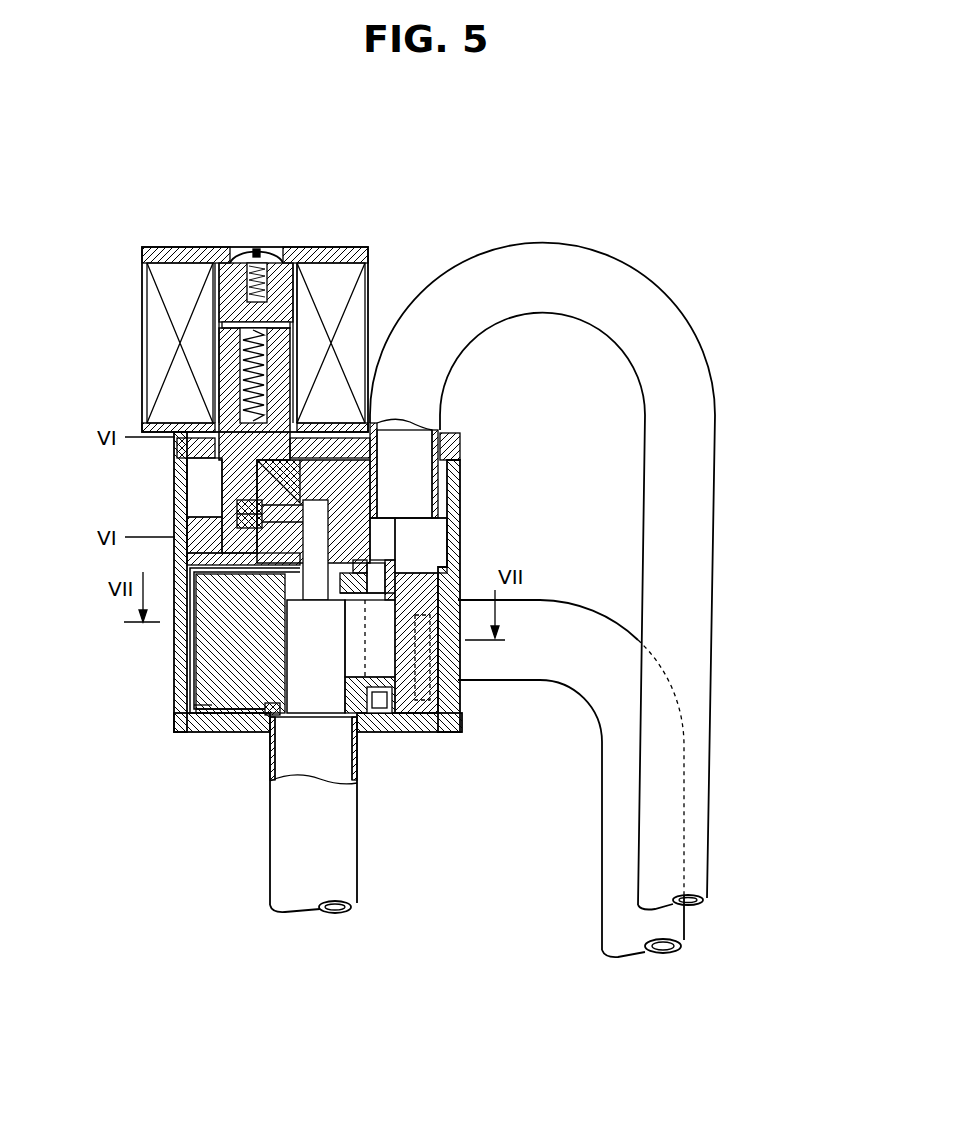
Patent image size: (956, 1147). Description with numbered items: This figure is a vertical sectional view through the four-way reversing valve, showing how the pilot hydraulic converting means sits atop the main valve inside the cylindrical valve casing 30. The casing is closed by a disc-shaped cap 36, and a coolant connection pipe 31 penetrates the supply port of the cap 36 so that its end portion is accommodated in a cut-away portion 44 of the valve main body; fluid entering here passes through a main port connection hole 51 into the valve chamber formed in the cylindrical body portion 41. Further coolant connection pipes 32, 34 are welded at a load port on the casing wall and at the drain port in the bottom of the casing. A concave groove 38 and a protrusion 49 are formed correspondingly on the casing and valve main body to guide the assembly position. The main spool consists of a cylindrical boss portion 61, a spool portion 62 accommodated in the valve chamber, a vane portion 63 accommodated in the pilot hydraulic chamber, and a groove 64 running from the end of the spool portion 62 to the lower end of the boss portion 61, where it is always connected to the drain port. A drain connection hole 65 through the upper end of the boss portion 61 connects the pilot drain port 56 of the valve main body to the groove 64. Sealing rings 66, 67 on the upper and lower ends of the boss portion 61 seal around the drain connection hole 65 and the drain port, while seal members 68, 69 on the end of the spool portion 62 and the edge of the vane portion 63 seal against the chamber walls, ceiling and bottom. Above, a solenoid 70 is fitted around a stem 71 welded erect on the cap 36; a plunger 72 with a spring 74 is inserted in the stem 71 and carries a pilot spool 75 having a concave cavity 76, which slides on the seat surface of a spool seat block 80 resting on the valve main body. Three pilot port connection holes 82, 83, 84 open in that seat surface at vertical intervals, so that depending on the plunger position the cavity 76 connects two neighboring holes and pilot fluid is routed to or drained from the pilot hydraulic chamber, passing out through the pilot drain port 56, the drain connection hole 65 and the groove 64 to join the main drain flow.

The valve casing 30 is at (174, 706).
The coolant connection pipe 31 is at (707, 603).
The coolant connection pipe 32 is at (605, 813).
The coolant connection pipe 34 is at (352, 885).
The cap 36 is at (375, 490).
The concave groove 38 is at (448, 735).
The body portion 41 is at (457, 573).
The cut-away portion 44 is at (427, 525).
The protrusion 49 is at (420, 735).
The main port connection hole 51 is at (397, 562).
The pilot drain port 56 is at (375, 457).
The boss portion 61 is at (250, 730).
The spool portion 62 is at (372, 735).
The vane portion 63 is at (190, 735).
The groove 64 is at (315, 712).
The drain connection hole 65 is at (318, 600).
The sealing ring 66 is at (397, 517).
The sealing ring 67 is at (270, 722).
The seal member 68 is at (392, 735).
The seal member 69 is at (212, 735).
The solenoid 70 is at (142, 332).
The stem 71 is at (215, 303).
The plunger 72 is at (262, 478).
The spring 74 is at (243, 362).
The pilot spool 75 is at (240, 505).
The cavity 76 is at (215, 522).
The spool seat block 80 is at (460, 460).
The pilot port connection hole 82 is at (205, 468).
The pilot port connection hole 83 is at (200, 558).
The pilot port connection hole 84 is at (280, 583).